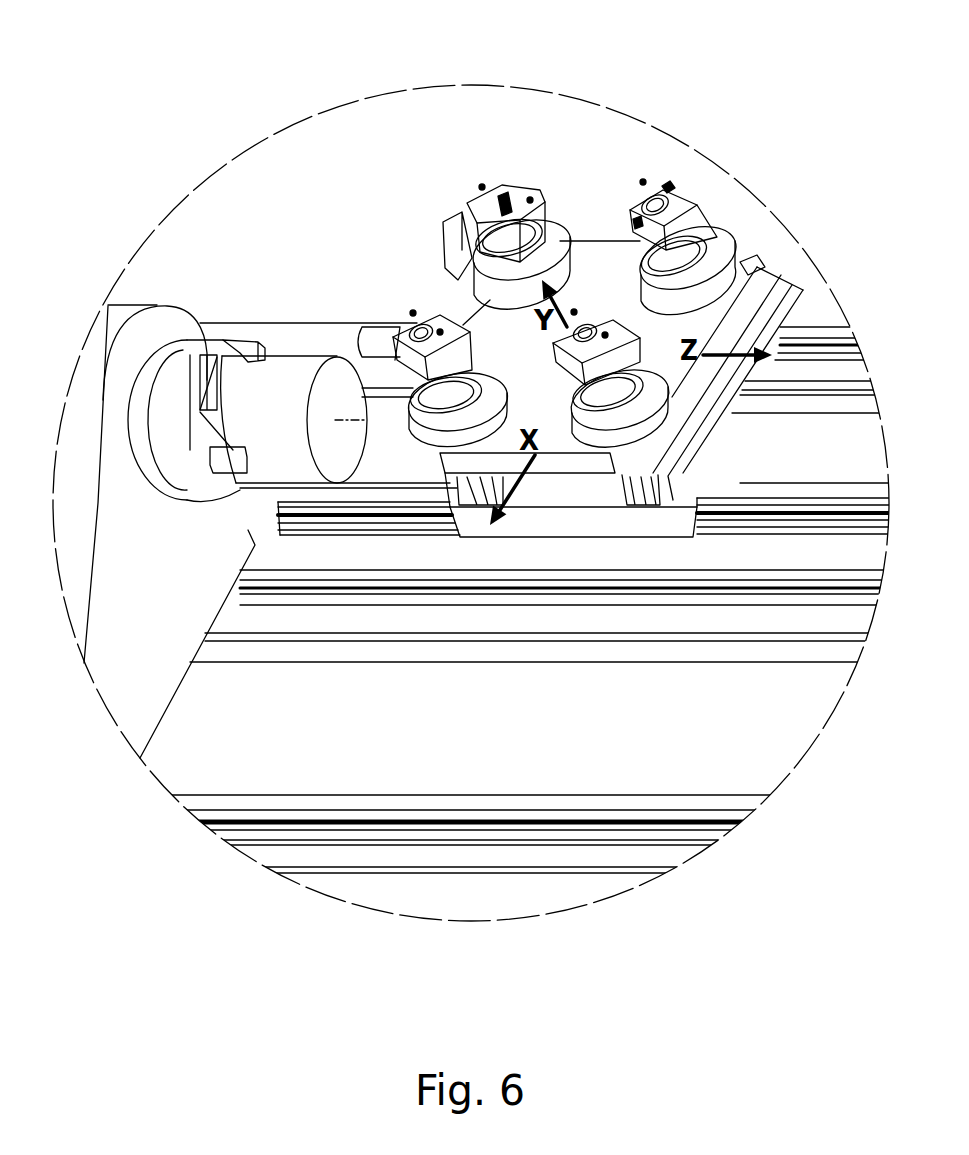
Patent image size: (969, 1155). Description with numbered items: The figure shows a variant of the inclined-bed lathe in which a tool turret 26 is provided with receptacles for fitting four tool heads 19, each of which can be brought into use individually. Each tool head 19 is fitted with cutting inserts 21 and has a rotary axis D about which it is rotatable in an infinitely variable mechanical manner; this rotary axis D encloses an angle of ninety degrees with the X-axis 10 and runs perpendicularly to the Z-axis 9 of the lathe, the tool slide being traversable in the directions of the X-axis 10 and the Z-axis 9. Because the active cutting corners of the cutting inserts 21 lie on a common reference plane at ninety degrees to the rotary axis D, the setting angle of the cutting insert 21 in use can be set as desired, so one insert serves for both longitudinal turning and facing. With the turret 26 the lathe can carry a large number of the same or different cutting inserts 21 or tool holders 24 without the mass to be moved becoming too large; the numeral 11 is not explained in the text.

The Z-axis 9 is at (757, 345).
The X-axis 10 is at (505, 470).
The tool carrier / turret plate 11 is at (578, 255).
The tool head 19 is at (637, 227).
The cutting insert 21 is at (669, 186).
The tool holder 24 is at (500, 267).
The tool turret 26 is at (735, 318).
The rotary axis D is at (576, 311).